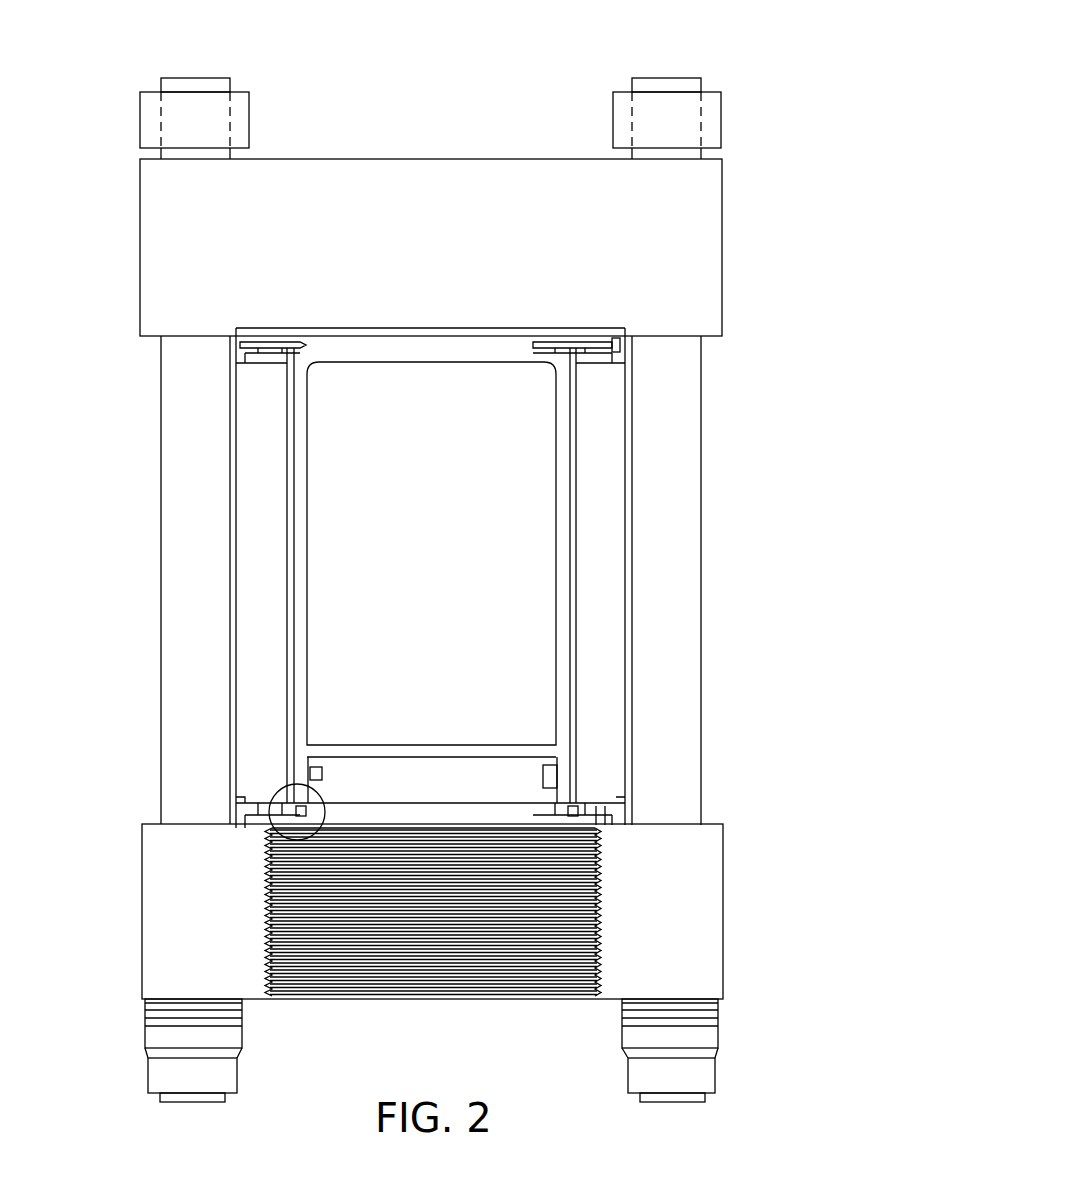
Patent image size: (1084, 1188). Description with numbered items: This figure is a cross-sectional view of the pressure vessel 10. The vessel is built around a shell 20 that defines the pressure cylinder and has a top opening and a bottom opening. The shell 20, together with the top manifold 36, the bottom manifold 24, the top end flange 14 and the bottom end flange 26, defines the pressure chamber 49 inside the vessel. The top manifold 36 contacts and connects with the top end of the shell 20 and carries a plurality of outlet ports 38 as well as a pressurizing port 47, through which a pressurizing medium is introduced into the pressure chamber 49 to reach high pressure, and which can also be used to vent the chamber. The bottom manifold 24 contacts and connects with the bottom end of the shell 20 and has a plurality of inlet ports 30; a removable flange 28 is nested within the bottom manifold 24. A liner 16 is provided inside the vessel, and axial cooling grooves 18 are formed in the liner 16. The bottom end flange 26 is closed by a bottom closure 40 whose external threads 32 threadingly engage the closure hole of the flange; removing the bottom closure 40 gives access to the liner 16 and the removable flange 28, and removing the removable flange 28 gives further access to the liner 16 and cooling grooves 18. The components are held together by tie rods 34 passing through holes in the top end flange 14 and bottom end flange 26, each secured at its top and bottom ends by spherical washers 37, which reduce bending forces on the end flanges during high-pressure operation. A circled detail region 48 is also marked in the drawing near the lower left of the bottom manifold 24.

The pressure vessel 10 is at (116, 304).
The top end flange 14 is at (455, 175).
The tie rods 34 is at (671, 78).
The shell 20 is at (617, 485).
The top manifold 36 is at (515, 345).
The outlet ports 38 is at (272, 352).
The pressurizing port 47 is at (615, 372).
The liner 16 is at (565, 545).
The cooling grooves 18 is at (575, 572).
The pressure chamber 49 is at (342, 597).
The bottom manifold 24 is at (602, 820).
The removable flange 28 is at (575, 803).
The detail region 48 is at (270, 796).
The inlet ports 30 is at (605, 808).
The bottom end flange 26 is at (683, 975).
The bottom closure 40 is at (430, 998).
The external threads 32 is at (462, 972).
The spherical washers 37 is at (705, 1035).